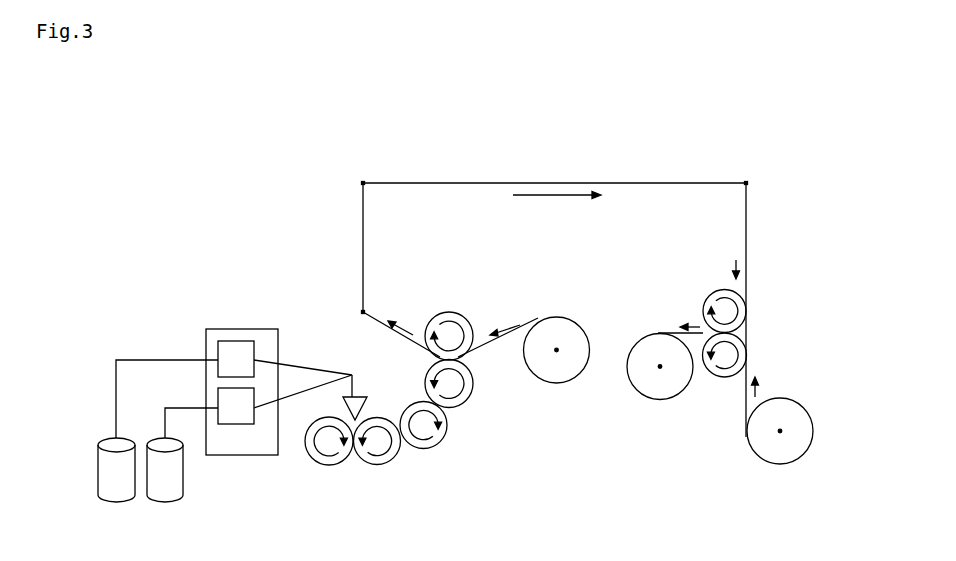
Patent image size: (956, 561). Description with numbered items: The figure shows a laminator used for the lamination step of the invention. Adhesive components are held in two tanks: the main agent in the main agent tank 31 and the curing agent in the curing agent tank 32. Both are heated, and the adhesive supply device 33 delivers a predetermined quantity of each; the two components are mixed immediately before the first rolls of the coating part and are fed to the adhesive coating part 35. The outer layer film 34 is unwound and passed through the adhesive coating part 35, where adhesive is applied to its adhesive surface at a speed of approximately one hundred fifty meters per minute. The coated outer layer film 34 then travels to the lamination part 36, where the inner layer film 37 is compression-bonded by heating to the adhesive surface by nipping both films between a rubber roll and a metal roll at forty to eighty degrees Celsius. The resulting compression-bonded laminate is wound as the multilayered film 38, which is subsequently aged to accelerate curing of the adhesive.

The main agent tank 31 is at (115, 492).
The curing agent tank 32 is at (165, 492).
The adhesive supply device 33 is at (218, 329).
The outer layer film 34 is at (581, 318).
The adhesive coating part 35 is at (463, 418).
The lamination part 36 is at (757, 333).
The inner layer film 37 is at (808, 453).
The multilayered film 38 is at (647, 332).